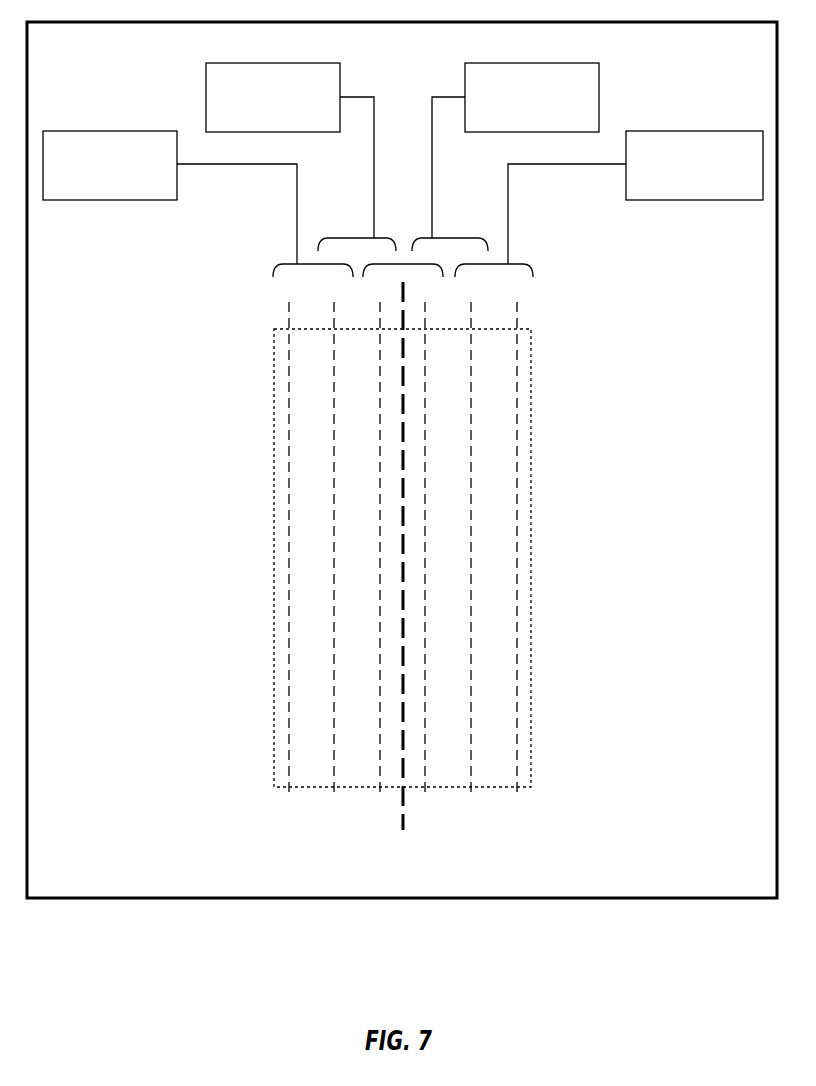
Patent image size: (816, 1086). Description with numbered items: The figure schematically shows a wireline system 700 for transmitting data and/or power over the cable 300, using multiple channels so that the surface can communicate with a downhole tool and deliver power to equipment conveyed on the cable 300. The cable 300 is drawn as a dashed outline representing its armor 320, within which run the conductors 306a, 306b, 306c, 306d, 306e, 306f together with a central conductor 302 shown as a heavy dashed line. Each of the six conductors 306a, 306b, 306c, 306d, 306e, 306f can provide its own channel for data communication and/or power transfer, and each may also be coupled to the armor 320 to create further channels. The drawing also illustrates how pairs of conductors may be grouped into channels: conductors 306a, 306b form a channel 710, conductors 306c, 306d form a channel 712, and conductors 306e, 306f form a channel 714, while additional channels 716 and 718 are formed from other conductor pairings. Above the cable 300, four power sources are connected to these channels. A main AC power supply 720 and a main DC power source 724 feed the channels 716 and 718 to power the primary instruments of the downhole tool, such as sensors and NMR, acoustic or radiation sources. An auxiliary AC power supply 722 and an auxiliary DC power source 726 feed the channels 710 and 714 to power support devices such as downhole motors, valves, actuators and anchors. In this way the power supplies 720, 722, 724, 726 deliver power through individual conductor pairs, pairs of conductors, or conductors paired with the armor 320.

The system 700 is at (657, 76).
The main AC power supply 720 is at (265, 63).
The auxiliary AC power supply 722 is at (112, 131).
The main DC power source 724 is at (549, 63).
The auxiliary DC power source 726 is at (695, 131).
The channel 710 is at (285, 264).
The channel 712 is at (401, 263).
The channel 714 is at (520, 264).
The channel 716 is at (358, 238).
The channel 718 is at (449, 238).
The cable 300 is at (200, 447).
The armor 320 is at (274, 397).
The center conductor / ground 302 is at (403, 830).
The conductor 306a is at (289, 795).
The conductor 306b is at (334, 795).
The conductor 306c is at (380, 795).
The conductor 306d is at (425, 795).
The conductor 306e is at (471, 795).
The conductor 306f is at (517, 795).